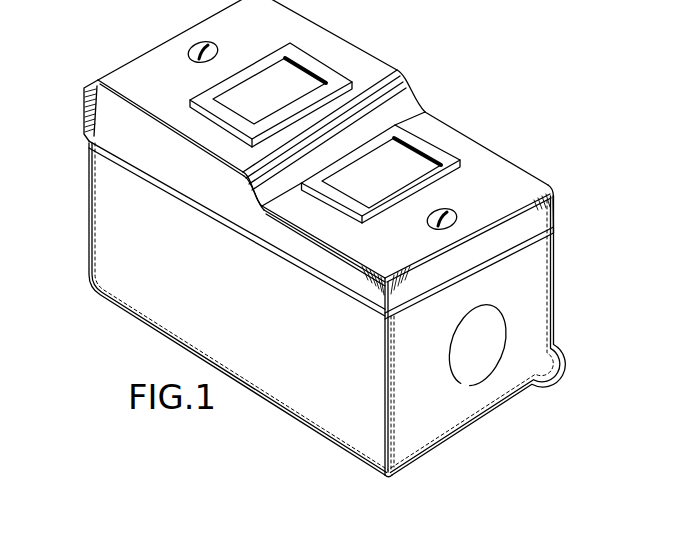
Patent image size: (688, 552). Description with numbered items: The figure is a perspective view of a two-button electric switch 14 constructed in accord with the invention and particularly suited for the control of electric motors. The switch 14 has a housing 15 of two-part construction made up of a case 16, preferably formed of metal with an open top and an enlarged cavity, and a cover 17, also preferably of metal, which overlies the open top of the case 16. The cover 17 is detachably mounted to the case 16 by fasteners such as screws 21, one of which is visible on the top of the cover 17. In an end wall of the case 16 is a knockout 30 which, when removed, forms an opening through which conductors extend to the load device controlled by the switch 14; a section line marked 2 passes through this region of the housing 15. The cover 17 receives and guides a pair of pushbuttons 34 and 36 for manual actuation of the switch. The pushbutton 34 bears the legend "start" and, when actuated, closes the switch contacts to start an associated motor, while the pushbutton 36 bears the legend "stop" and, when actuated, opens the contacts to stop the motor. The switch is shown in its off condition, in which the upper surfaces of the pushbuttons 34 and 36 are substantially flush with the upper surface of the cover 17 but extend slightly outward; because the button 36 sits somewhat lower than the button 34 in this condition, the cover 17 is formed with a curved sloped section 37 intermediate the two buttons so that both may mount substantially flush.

The section line 2- 2 is at (170, 33).
The two button electric switch 14 is at (426, 46).
The housing 15 is at (326, 159).
The case 16 is at (538, 350).
The cover 17 is at (472, 148).
The screws 21 is at (216, 48).
The knockouts 30 is at (452, 379).
The pushbutton 34 is at (320, 67).
The pushbutton 36 is at (433, 147).
The curved sloped section 37 is at (250, 190).